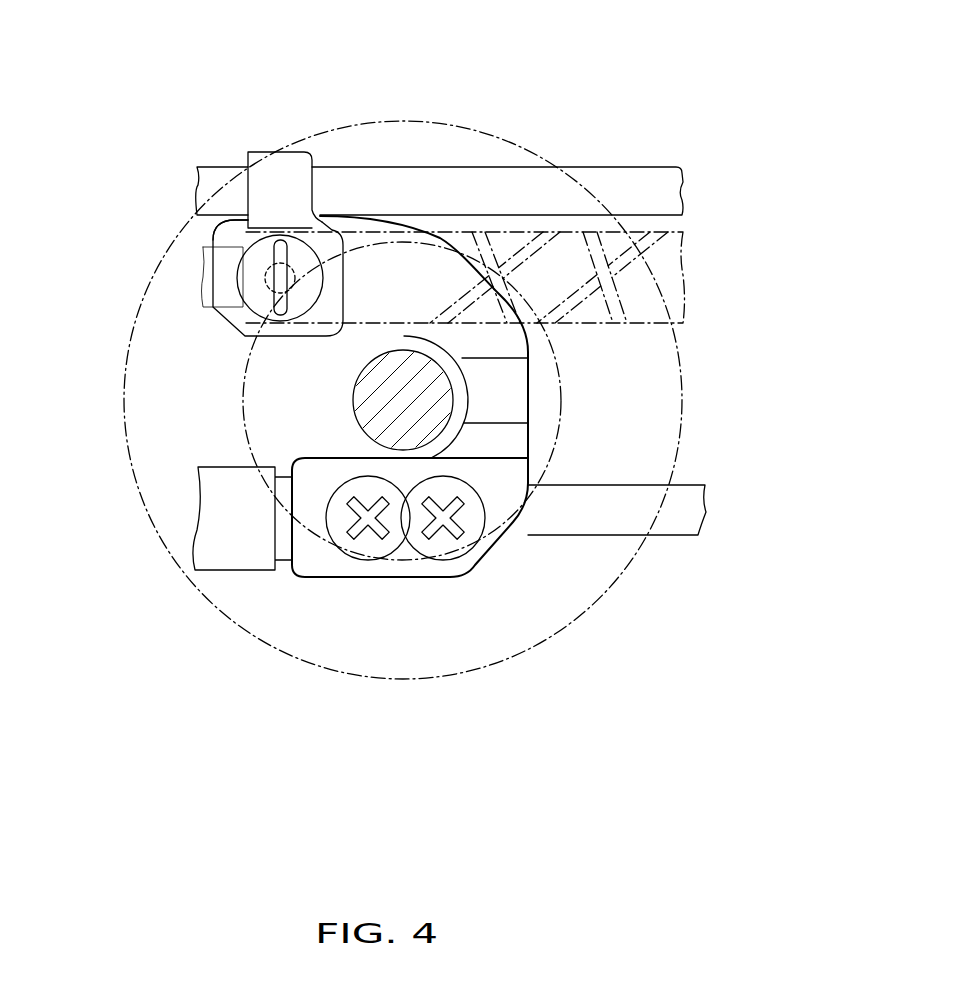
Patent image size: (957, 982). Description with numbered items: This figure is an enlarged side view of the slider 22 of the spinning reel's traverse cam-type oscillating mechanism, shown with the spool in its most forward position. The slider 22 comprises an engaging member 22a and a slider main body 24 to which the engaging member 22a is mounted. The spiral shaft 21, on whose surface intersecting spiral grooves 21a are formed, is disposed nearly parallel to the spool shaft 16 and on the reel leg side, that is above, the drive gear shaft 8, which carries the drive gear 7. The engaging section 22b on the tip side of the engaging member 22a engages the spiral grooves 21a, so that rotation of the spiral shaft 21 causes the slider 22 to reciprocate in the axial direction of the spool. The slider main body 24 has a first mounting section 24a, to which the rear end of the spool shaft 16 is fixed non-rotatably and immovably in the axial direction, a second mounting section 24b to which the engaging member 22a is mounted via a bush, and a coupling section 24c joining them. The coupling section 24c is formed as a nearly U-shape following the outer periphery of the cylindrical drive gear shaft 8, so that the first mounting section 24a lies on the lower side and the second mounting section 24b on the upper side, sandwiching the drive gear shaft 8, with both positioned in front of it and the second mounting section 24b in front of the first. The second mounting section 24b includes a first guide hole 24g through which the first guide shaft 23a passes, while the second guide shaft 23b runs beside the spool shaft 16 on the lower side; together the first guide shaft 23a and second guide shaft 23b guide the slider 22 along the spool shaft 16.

The drive gear 7 is at (497, 137).
The drive gear shaft 8 is at (370, 406).
The spool shaft 16 is at (230, 571).
The spiral shaft 21 is at (684, 242).
The spiral grooves 21a is at (652, 230).
The slider 22 is at (545, 398).
The engaging member 22a is at (240, 273).
The engaging section 22b is at (280, 252).
The first guide shaft 23a is at (622, 169).
The second guide shaft 23b is at (688, 485).
The slider main body 24 is at (500, 548).
The first mounting section 24a is at (323, 532).
The second mounting section 24b is at (245, 236).
The coupling section 24c is at (510, 413).
The first guide hole 24g is at (270, 168).